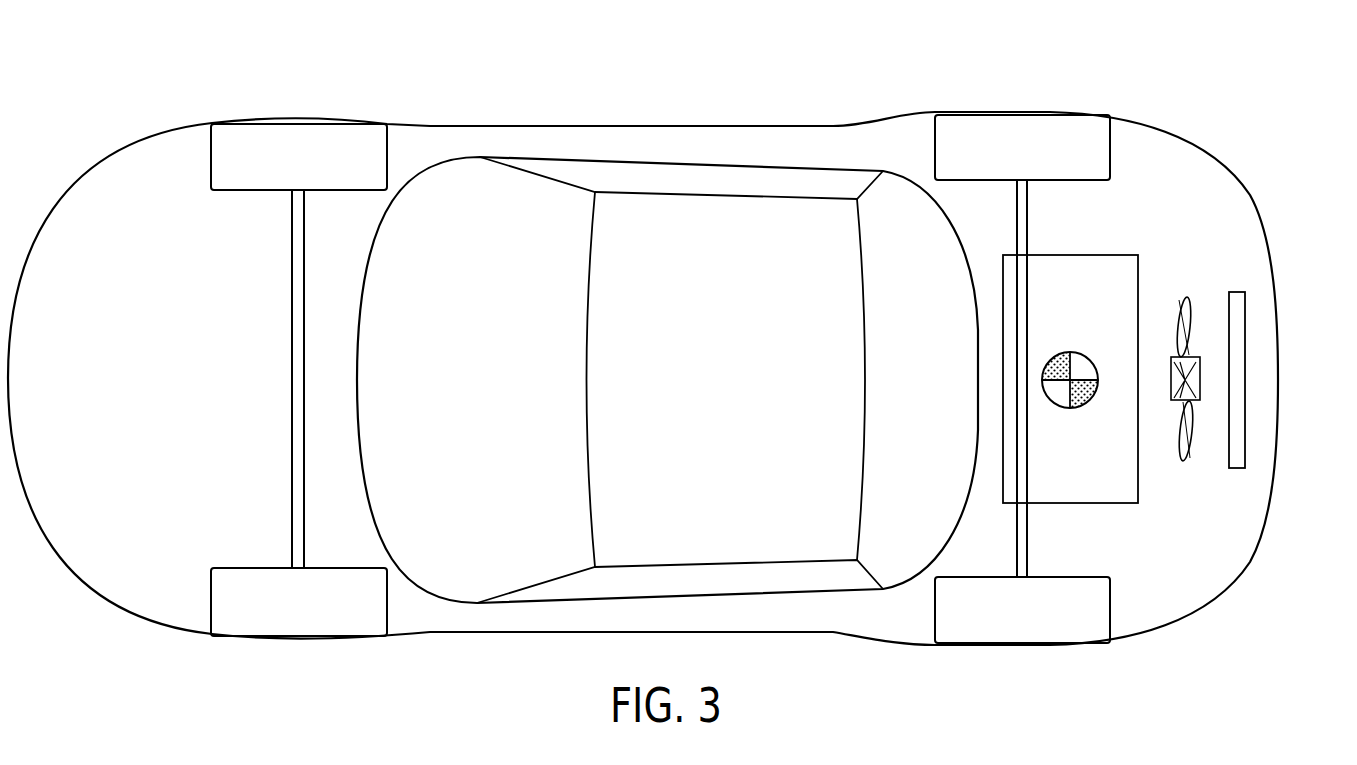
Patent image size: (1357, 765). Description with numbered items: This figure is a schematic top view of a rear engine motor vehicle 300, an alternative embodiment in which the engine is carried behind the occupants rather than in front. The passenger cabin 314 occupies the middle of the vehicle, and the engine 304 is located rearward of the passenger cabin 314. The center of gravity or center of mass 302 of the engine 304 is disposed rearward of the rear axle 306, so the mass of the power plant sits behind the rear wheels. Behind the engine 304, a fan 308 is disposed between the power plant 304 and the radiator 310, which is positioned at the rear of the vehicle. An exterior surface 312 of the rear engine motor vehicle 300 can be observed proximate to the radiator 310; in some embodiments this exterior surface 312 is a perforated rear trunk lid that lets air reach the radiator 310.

The rear engine motor vehicle 300 is at (547, 102).
The center of gravity 302 is at (1081, 406).
The engine 304 is at (1118, 255).
The rear axle 306 is at (1030, 528).
The fan 308 is at (1190, 462).
The radiator 310 is at (1237, 290).
The exterior surface 312 is at (1279, 379).
The passenger cabin 314 is at (684, 367).